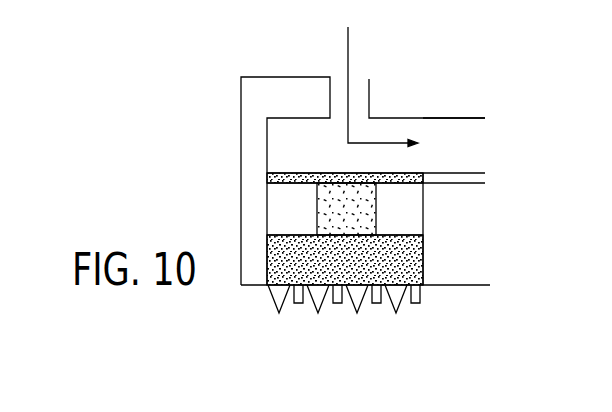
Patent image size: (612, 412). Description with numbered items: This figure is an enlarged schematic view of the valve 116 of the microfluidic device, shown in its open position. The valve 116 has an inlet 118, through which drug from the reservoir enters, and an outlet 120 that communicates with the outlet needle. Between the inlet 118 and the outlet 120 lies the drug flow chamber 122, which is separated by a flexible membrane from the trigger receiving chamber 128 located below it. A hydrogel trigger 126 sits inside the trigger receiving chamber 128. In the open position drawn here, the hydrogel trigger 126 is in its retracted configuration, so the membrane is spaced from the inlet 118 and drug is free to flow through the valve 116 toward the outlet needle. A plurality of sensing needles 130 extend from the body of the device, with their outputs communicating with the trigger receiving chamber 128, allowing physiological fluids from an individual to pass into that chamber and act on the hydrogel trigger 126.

The valve 116 is at (316, 348).
The inlet 118 is at (360, 83).
The outlet 120 is at (490, 145).
The drug flow chamber 122 is at (283, 146).
The hydrogel trigger 126 is at (377, 208).
The trigger receiving chamber 128 is at (278, 197).
The sensing needles 130 is at (275, 297).